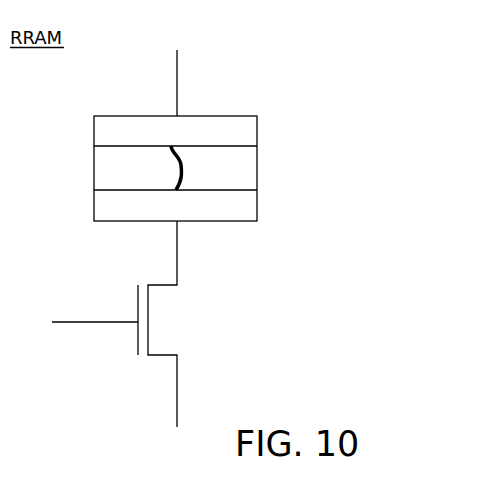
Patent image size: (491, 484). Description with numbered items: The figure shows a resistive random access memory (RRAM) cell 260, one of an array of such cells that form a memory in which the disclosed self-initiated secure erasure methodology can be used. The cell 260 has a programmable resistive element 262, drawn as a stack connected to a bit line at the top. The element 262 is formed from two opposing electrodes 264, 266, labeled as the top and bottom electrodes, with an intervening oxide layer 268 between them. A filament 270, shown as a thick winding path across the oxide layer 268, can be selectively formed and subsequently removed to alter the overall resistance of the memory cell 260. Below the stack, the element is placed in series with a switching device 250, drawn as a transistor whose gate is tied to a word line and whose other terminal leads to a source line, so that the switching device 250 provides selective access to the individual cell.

The resistive random access memory (RRAM) cell 260 is at (282, 68).
The programmable resistive element 262 is at (73, 151).
The electrode 264 is at (258, 133).
The electrode 266 is at (258, 210).
The oxide layer 268 is at (258, 165).
The filament 270 is at (176, 171).
The switching device 250 is at (149, 318).